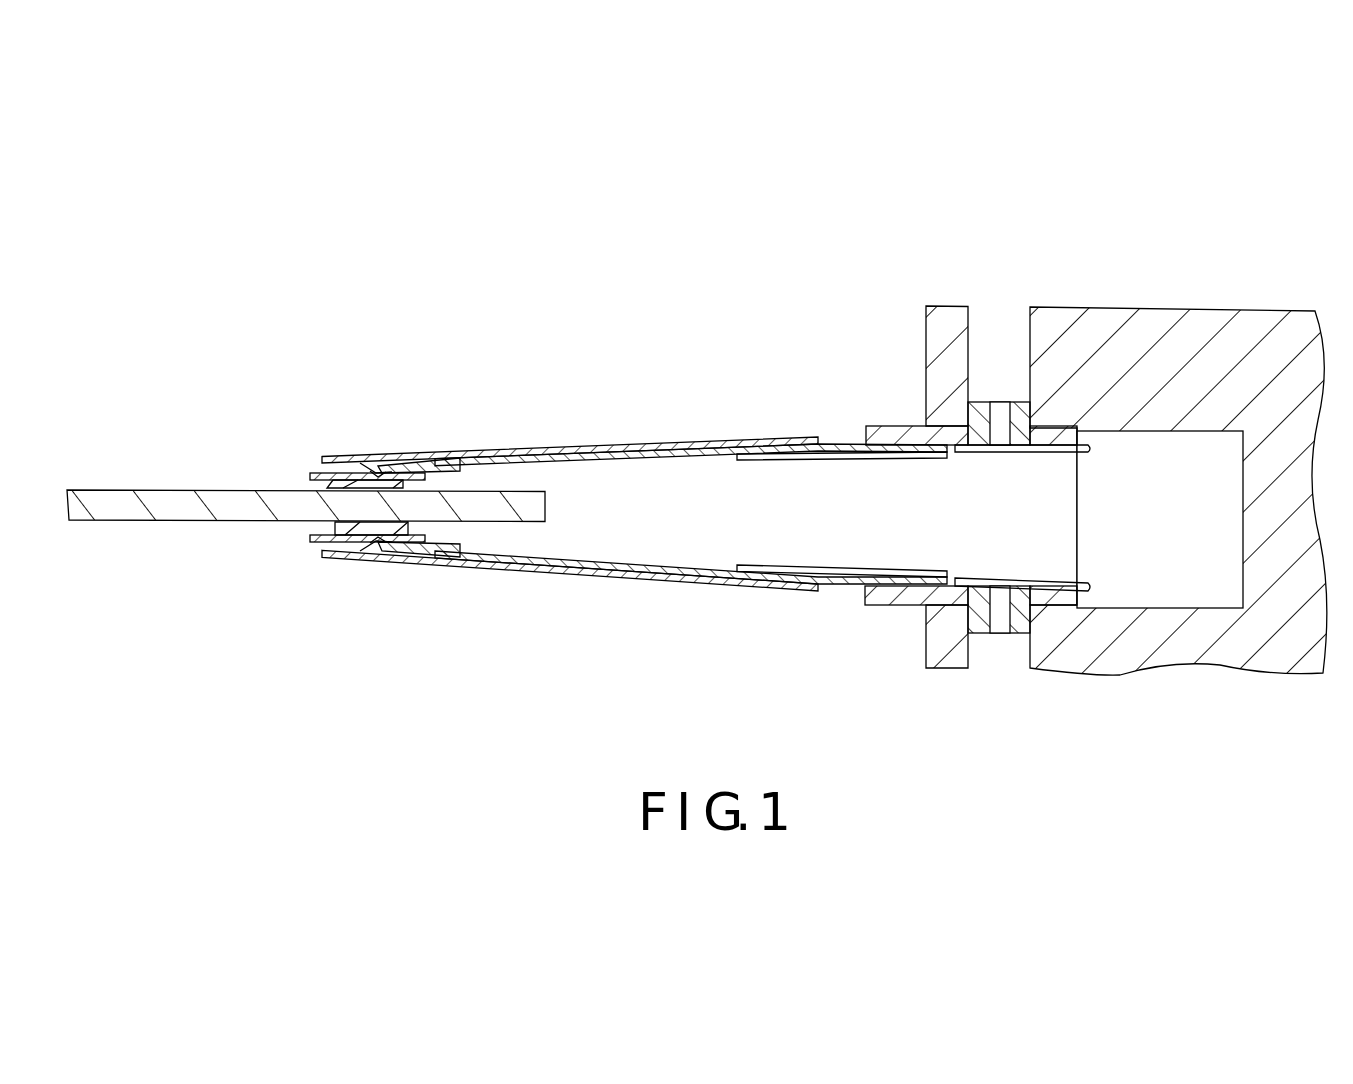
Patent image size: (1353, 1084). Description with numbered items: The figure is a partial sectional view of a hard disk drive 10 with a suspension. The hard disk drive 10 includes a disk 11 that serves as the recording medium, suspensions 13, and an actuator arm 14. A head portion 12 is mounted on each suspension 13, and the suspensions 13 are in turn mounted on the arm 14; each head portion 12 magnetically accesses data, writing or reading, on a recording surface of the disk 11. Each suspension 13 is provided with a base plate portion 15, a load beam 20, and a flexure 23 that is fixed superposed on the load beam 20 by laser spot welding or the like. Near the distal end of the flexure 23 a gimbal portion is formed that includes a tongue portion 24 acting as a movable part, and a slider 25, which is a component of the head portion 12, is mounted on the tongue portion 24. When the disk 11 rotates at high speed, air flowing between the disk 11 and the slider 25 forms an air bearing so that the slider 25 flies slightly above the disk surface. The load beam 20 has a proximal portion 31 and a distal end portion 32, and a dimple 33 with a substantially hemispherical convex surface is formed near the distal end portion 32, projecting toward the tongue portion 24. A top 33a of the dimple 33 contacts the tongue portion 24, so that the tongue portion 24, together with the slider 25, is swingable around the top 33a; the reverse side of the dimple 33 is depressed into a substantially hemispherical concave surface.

The hard disk drive 10 is at (1204, 243).
The disk 11 is at (142, 497).
The head portion 12 is at (350, 515).
The suspension 13 is at (706, 503).
The arm 14 is at (1140, 308).
The base plate portion 15 is at (890, 425).
The load beam 20 is at (500, 450).
The flexure 23 is at (640, 458).
The tongue portion 24 is at (432, 460).
The slider 25 is at (326, 486).
The proximal portion 31 is at (802, 437).
The distal end portion 32 is at (348, 471).
The dimple 33 is at (383, 515).
The top of the dimple 33a is at (398, 464).